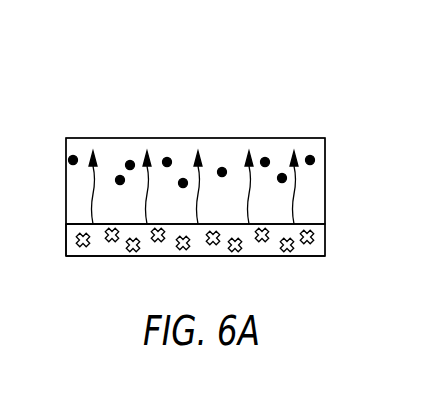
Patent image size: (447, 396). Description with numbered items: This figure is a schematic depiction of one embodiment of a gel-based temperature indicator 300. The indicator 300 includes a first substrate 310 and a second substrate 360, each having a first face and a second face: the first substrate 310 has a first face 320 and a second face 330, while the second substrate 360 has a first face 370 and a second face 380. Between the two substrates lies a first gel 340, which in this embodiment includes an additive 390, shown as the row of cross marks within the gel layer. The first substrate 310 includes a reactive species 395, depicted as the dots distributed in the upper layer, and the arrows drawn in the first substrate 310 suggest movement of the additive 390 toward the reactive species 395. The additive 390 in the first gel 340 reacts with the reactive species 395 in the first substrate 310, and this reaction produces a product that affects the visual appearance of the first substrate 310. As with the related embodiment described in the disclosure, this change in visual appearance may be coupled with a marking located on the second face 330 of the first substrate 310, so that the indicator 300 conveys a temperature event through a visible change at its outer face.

The gel-based temperature indicator 300 is at (143, 108).
The first substrate 310 is at (312, 172).
The first face of first substrate 320 is at (113, 225).
The second face of first substrate 330 is at (203, 139).
The first gel 340 is at (66, 236).
The second substrate 360 is at (327, 240).
The first face of second substrate 370 is at (72, 258).
The second face of second substrate 380 is at (230, 224).
The additive 390 is at (185, 244).
The reactive species 395 is at (130, 165).